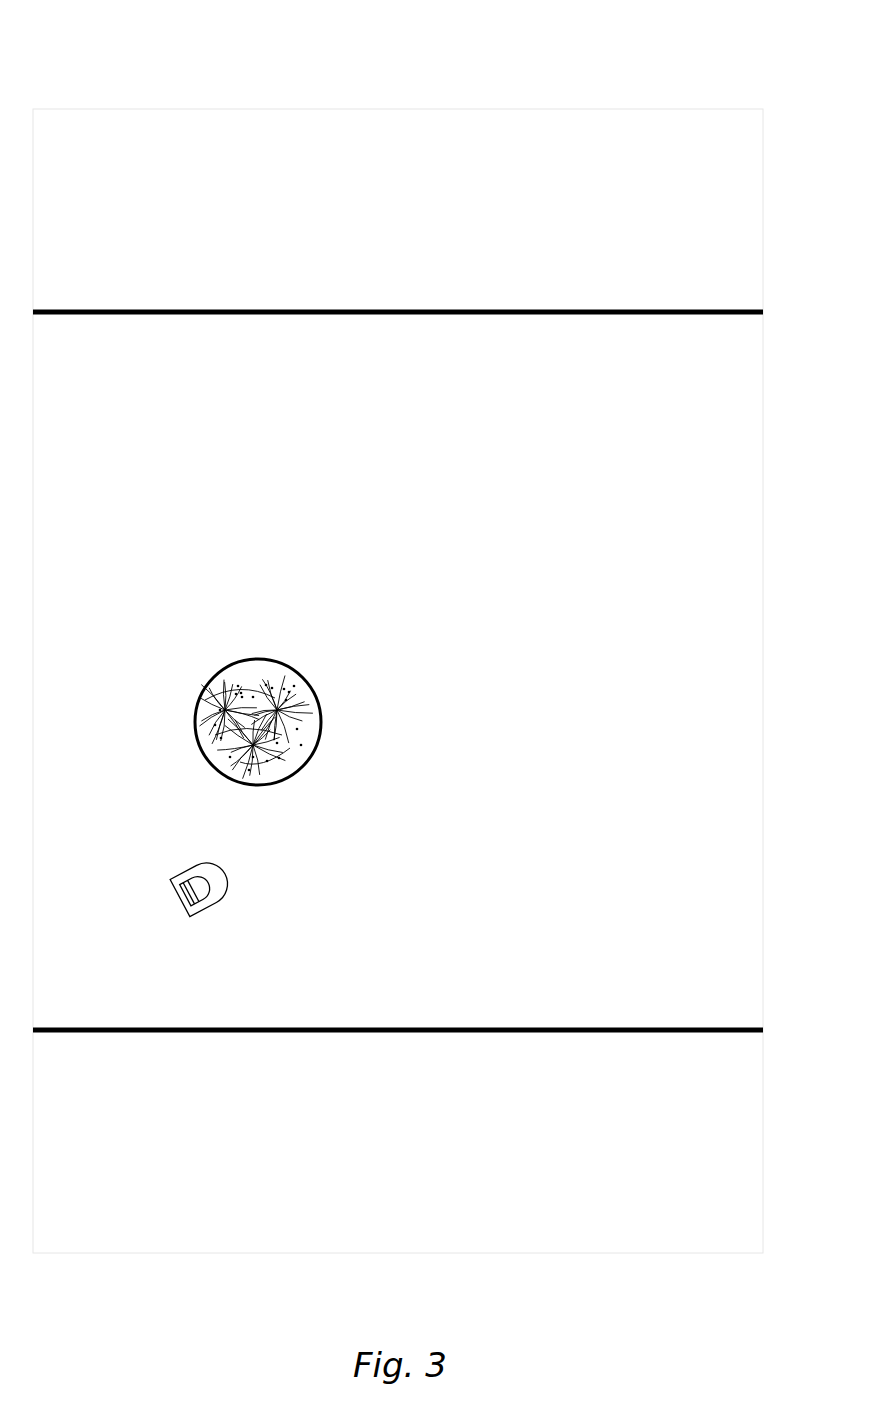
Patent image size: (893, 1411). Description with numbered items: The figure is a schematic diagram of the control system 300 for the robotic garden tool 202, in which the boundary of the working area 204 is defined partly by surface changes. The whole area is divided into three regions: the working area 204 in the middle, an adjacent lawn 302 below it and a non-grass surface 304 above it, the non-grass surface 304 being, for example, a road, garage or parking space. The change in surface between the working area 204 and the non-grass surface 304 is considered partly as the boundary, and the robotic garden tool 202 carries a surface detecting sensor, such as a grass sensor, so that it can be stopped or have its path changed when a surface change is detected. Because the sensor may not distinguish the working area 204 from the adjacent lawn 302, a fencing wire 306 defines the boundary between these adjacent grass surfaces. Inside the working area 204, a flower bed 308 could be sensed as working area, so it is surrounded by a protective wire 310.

The control system 300 is at (652, 80).
The non-grass surface 304 is at (493, 252).
The working area 204 is at (510, 665).
The fencing wire 306 is at (375, 1028).
The adjacent lawn 302 is at (476, 1158).
The protective wire 310 is at (322, 728).
The flower bed 308 is at (258, 688).
The robotic garden tool 202 is at (222, 906).